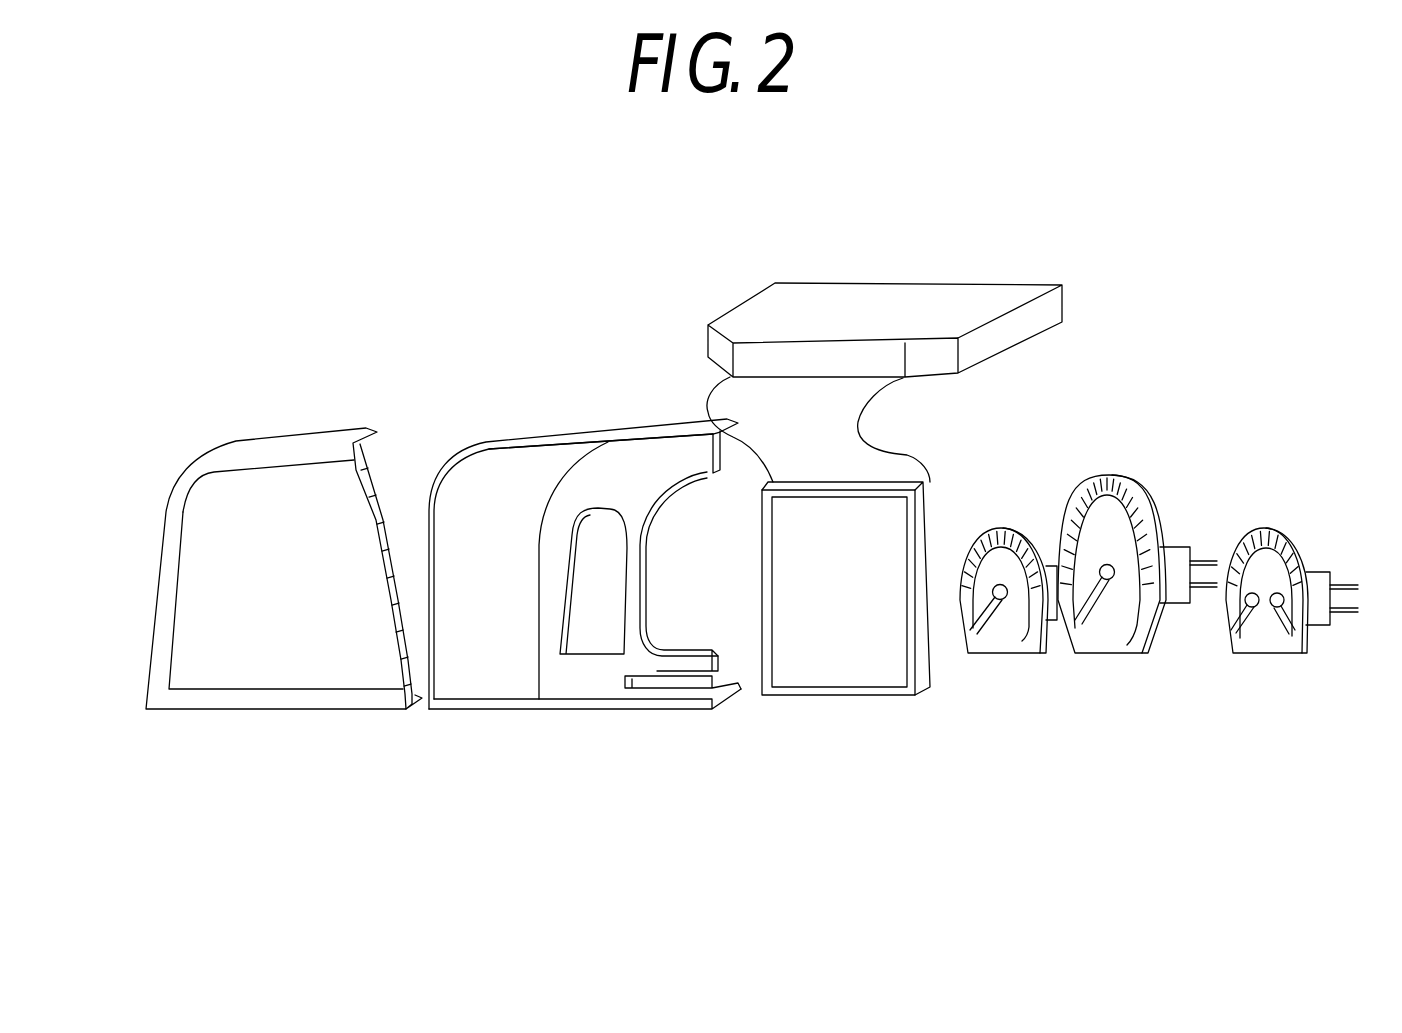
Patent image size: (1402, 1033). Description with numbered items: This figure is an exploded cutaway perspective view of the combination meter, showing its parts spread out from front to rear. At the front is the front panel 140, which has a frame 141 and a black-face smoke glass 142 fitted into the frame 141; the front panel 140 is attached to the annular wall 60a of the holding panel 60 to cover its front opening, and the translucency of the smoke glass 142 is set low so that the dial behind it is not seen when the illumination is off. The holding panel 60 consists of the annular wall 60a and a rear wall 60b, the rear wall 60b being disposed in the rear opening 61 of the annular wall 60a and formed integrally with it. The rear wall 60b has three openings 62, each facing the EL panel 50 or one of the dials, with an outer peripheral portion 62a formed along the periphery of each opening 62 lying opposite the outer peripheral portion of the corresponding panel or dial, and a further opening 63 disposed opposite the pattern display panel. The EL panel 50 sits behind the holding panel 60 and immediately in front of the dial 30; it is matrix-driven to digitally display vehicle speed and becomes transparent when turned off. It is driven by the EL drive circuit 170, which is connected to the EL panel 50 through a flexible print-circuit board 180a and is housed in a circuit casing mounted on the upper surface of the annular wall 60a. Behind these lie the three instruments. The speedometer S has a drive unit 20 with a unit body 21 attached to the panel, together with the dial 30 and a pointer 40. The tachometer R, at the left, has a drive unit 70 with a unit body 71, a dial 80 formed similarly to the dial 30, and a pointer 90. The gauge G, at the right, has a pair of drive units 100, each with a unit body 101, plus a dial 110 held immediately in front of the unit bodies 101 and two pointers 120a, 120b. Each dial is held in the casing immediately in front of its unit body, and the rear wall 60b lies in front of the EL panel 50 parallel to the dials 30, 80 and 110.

The front panel 140 is at (320, 724).
The frame 141 is at (255, 457).
The smoke glass 142 is at (231, 665).
The holding panel 60 is at (571, 563).
The annular wall 60a is at (450, 452).
The rear wall 60b is at (537, 690).
The rear opening 61 is at (680, 424).
The openings 62 is at (568, 573).
The outer peripheral portion 62a is at (655, 488).
The opening 63 is at (667, 690).
The EL drive circuit 170 is at (1036, 262).
The flexible print-circuit board 180a is at (857, 428).
The EL panel 50 is at (828, 712).
The dial 80 is at (1023, 668).
The pointer 90 is at (990, 647).
The tachometer R is at (994, 513).
The unit body 71 is at (1052, 618).
The dial 30 is at (1134, 676).
The pointer 40 is at (1092, 628).
The drive unit 70 is at (1060, 641).
The speedometer S is at (1103, 457).
The drive unit 20 is at (1182, 536).
The unit body 21 is at (1173, 592).
The dial 110 is at (1273, 669).
The pointer 120a is at (1246, 645).
The pointer 120b is at (1293, 642).
The gauge G is at (1275, 513).
The drive units 100 is at (1338, 636).
The unit body 101 is at (1322, 577).